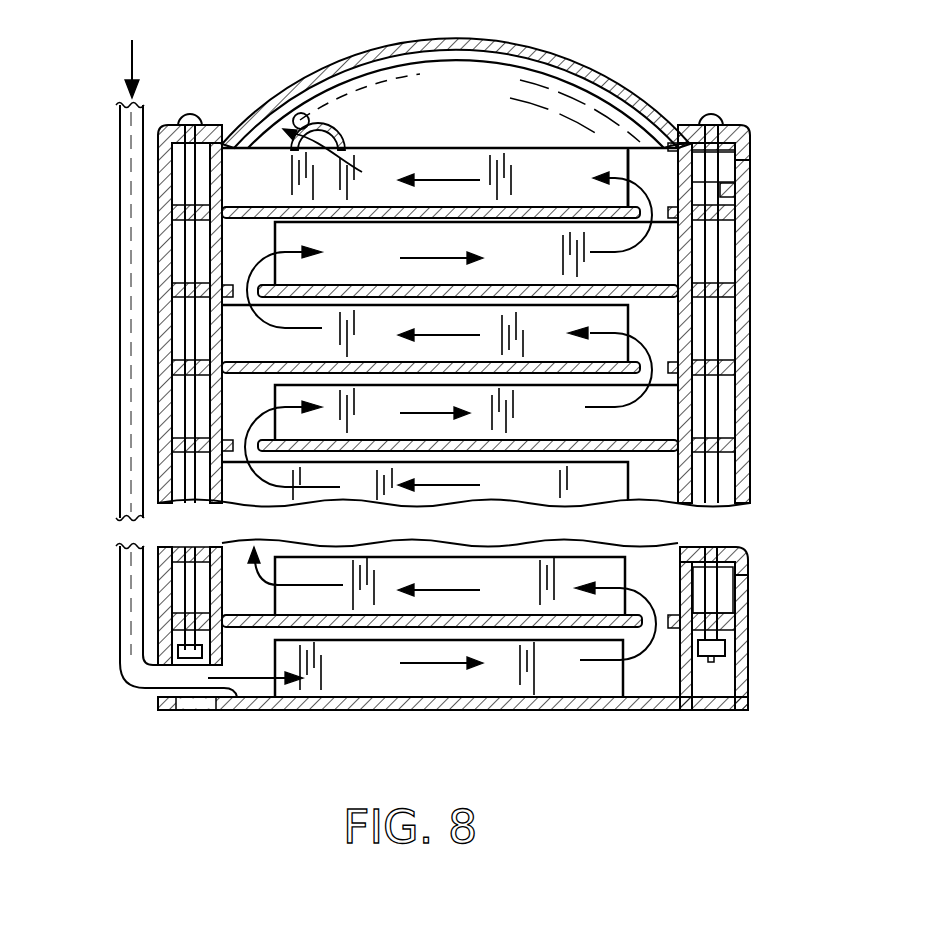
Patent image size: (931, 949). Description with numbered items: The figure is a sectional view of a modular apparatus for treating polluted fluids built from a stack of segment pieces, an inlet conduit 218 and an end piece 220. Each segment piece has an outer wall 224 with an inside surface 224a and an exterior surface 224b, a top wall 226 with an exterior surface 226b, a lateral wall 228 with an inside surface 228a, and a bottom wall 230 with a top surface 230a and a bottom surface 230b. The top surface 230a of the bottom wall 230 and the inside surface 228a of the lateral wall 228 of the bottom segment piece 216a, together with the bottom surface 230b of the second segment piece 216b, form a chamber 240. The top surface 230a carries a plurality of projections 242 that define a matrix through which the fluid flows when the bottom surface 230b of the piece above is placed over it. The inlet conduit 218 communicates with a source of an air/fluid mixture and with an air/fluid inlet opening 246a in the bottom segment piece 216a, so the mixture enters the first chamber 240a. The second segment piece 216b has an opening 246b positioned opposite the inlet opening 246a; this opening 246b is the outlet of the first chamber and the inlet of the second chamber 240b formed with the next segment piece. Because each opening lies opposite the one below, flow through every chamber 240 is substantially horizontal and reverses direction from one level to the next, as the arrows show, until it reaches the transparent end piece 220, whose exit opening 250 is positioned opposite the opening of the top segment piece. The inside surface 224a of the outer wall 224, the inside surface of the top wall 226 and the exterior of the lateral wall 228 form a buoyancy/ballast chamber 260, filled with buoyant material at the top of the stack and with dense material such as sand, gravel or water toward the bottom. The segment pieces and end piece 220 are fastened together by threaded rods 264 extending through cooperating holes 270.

The inlet conduit 218 is at (128, 616).
The end piece 220 is at (456, 36).
The outer wall 224 is at (752, 406).
The inside surface of outer wall 224a is at (833, 209).
The exterior surface of outer wall 224b is at (837, 176).
The top wall 226 is at (720, 128).
The exterior surface of top wall 226b is at (847, 142).
The lateral wall 228 is at (652, 188).
The inside surface of lateral wall 228a is at (668, 168).
The bottom wall 230 is at (438, 218).
The top surface of bottom wall 230a is at (373, 206).
The bottom surface of bottom wall 230b is at (570, 273).
The chamber 240 is at (458, 146).
The first chamber 240a is at (653, 684).
The second chamber 240b is at (660, 553).
The projections 242 is at (371, 276).
The air/fluid inlet opening 246a is at (232, 711).
The opening 246b is at (663, 612).
The exit opening 250 is at (296, 112).
The buoyancy/ballast chamber 260 is at (693, 132).
The rods 264 is at (732, 262).
The holes 270 is at (190, 114).
The bottom segment piece 216a is at (847, 679).
The second segment piece 216b is at (845, 581).